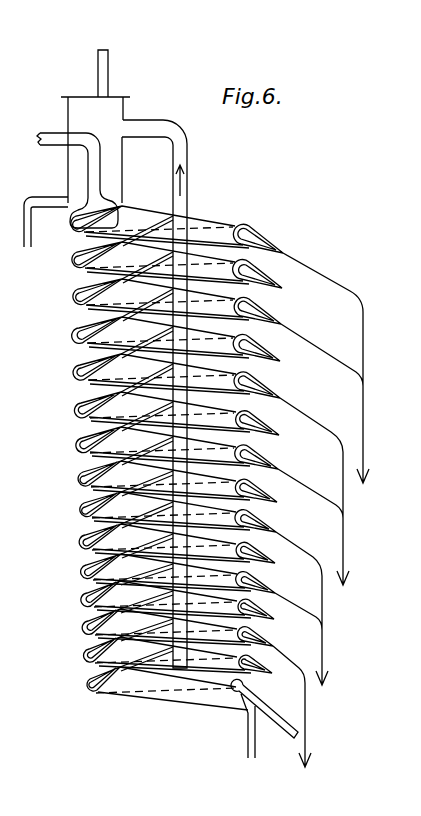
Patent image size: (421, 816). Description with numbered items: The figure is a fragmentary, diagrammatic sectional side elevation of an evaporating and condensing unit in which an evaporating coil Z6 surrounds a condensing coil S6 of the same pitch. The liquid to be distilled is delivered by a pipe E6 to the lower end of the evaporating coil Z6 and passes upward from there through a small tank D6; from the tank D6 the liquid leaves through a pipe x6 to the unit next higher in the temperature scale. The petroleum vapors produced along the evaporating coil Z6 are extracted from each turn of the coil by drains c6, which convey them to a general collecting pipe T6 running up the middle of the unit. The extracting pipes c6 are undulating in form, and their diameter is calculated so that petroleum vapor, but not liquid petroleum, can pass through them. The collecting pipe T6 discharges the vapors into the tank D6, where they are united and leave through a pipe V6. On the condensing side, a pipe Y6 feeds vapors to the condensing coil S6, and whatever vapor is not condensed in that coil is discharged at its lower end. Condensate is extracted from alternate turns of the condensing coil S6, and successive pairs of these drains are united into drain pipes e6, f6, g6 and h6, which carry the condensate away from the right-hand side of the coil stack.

The pipe V6 is at (98, 67).
The pipe Y6 is at (50, 133).
The small tank D6 is at (115, 157).
The general collecting pipe T6 is at (189, 142).
The pipe x6 is at (30, 222).
The drains c6 is at (155, 228).
The evaporating coil Z6 is at (207, 215).
The condensing coil S6 is at (256, 236).
The drain pipe e6 is at (364, 446).
The drain pipe f6 is at (345, 558).
The drain pipe g6 is at (324, 653).
The drain pipe h6 is at (307, 740).
The pipe E6 is at (287, 727).